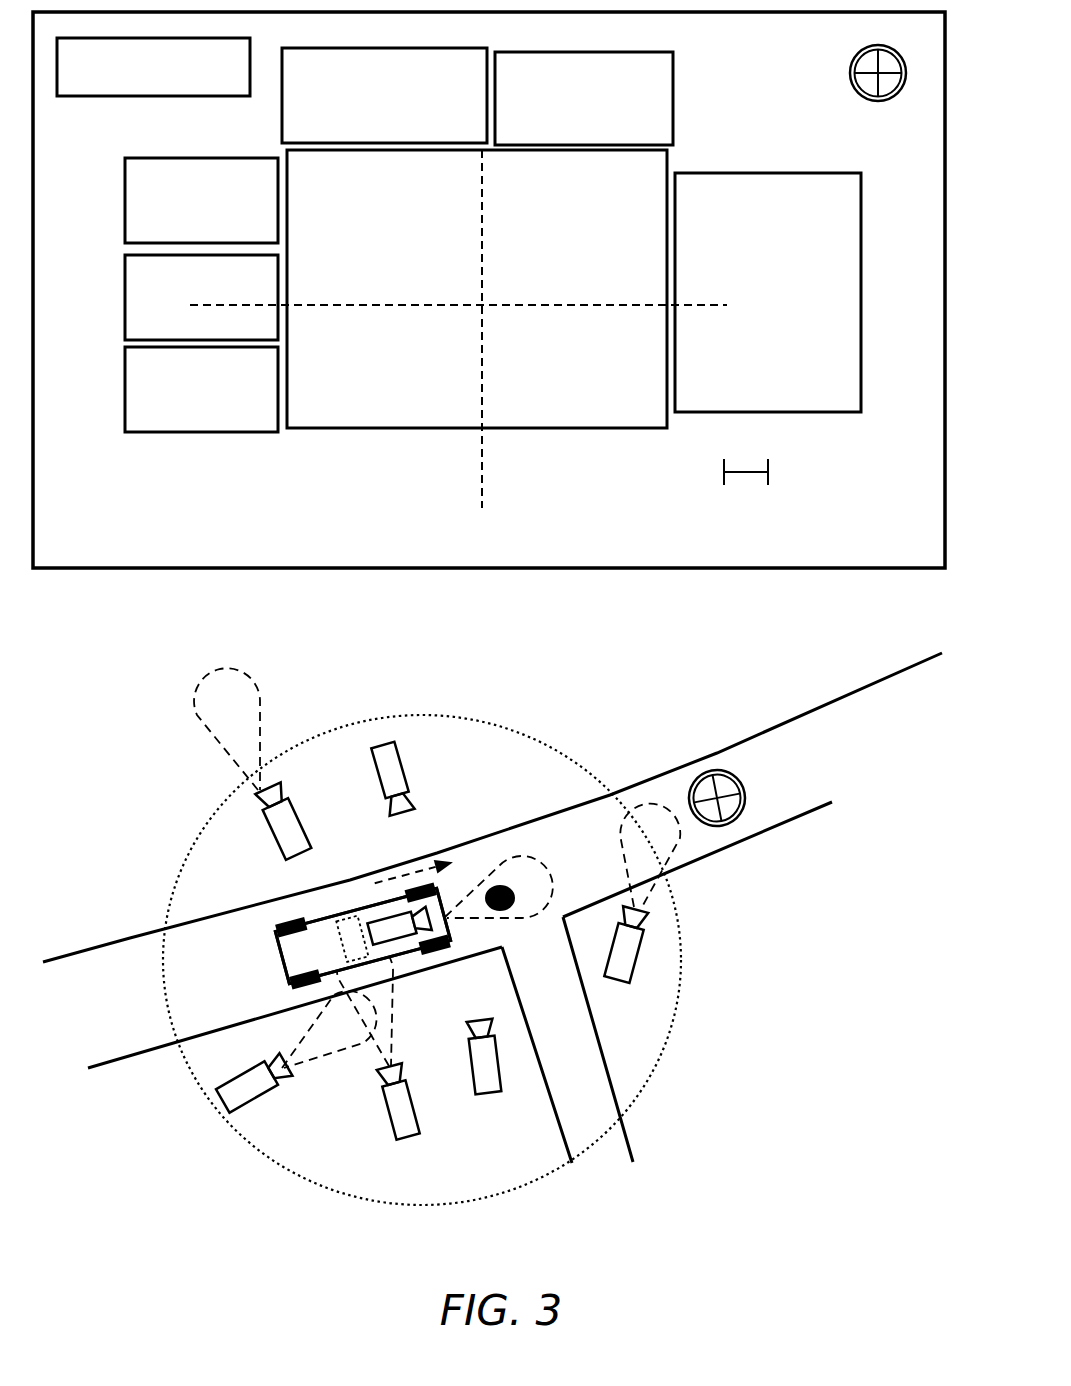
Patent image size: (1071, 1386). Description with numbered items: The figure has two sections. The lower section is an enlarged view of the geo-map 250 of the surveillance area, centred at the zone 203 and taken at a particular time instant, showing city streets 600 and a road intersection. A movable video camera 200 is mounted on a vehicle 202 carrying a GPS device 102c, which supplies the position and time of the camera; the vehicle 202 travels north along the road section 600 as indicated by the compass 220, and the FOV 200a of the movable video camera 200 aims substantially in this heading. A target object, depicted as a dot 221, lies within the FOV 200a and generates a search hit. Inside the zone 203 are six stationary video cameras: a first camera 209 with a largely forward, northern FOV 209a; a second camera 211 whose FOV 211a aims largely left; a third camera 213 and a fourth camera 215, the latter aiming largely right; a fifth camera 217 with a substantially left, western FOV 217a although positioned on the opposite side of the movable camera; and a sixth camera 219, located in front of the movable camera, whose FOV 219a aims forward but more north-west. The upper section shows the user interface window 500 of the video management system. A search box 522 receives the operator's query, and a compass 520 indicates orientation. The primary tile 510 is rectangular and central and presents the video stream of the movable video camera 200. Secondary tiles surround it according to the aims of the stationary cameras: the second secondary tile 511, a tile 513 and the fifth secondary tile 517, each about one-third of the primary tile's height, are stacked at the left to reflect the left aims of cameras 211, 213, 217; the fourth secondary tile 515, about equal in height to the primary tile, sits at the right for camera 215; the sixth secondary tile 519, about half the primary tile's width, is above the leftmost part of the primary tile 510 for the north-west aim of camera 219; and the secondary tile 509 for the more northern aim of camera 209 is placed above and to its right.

The user interface window 500 is at (202, 580).
The secondary tile 509 is at (675, 98).
The primary tile 510 is at (512, 298).
The second secondary tile 511 is at (125, 306).
The secondary tile 513 is at (124, 207).
The fourth secondary tile 515 is at (802, 413).
The fifth secondary tile 517 is at (193, 433).
The sixth secondary tile 519 is at (323, 49).
The compass indicator 520 is at (850, 73).
The search window or box 522 is at (148, 97).
The GPS device 102c is at (278, 948).
The movable video camera 200 is at (373, 913).
The FOV of the movable video camera 200a is at (533, 858).
The vehicle 202 is at (270, 937).
The zone 203 is at (265, 1153).
The first stationary video camera 209 is at (223, 1107).
The FOV of the first stationary video camera 209a is at (298, 1033).
The second stationary video camera 211 is at (388, 1112).
The FOV of the second stationary video camera 211a is at (363, 1050).
The third stationary video camera 213 is at (475, 1094).
The fourth stationary video camera 215 is at (408, 767).
The fifth stationary video camera 217 is at (288, 797).
The FOV of the fifth stationary video camera 217a is at (215, 747).
The sixth stationary video camera 219 is at (637, 957).
The FOV of the sixth stationary video camera 219a is at (655, 900).
The compass 220 is at (745, 817).
The dot representing target object 221 is at (498, 911).
The geo-map 250 is at (702, 1140).
The city streets / road section 600 is at (798, 758).